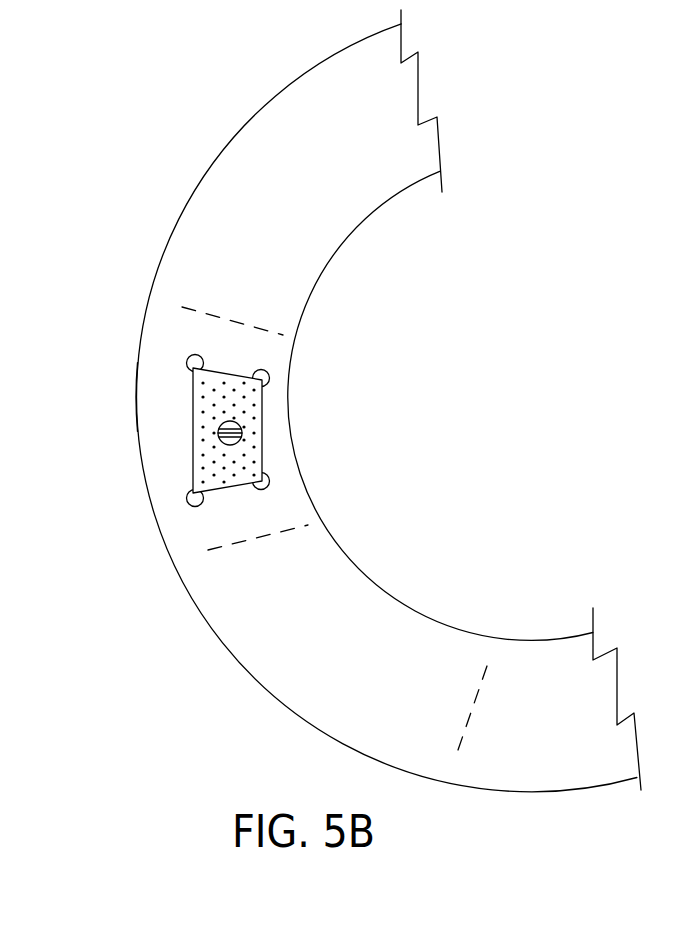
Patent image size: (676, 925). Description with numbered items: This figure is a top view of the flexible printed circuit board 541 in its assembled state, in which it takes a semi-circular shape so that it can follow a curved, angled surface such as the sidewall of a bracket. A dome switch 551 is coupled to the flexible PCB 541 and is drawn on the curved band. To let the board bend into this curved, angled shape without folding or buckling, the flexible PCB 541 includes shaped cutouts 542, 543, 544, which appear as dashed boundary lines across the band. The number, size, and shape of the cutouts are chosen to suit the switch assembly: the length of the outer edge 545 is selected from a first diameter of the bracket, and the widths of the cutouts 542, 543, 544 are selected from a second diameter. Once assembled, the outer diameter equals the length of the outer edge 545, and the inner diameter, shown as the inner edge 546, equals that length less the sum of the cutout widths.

The flexible printed circuit board 541 is at (202, 207).
The cutout 542 is at (488, 660).
The cutout 543 is at (277, 532).
The cutout 544 is at (253, 327).
The outer edge 545 is at (137, 377).
The inner edge 546 is at (410, 602).
The dome switch 551 is at (257, 452).